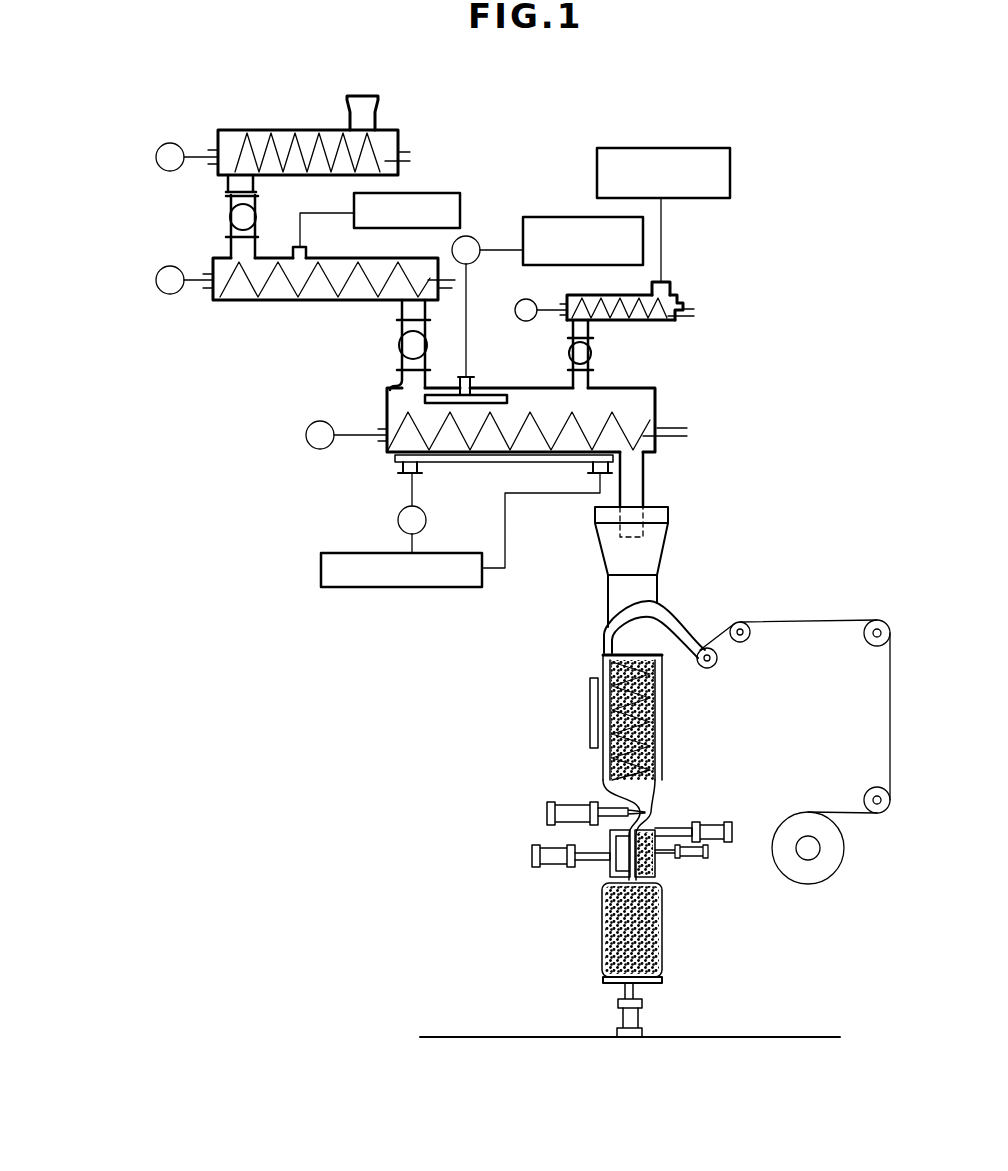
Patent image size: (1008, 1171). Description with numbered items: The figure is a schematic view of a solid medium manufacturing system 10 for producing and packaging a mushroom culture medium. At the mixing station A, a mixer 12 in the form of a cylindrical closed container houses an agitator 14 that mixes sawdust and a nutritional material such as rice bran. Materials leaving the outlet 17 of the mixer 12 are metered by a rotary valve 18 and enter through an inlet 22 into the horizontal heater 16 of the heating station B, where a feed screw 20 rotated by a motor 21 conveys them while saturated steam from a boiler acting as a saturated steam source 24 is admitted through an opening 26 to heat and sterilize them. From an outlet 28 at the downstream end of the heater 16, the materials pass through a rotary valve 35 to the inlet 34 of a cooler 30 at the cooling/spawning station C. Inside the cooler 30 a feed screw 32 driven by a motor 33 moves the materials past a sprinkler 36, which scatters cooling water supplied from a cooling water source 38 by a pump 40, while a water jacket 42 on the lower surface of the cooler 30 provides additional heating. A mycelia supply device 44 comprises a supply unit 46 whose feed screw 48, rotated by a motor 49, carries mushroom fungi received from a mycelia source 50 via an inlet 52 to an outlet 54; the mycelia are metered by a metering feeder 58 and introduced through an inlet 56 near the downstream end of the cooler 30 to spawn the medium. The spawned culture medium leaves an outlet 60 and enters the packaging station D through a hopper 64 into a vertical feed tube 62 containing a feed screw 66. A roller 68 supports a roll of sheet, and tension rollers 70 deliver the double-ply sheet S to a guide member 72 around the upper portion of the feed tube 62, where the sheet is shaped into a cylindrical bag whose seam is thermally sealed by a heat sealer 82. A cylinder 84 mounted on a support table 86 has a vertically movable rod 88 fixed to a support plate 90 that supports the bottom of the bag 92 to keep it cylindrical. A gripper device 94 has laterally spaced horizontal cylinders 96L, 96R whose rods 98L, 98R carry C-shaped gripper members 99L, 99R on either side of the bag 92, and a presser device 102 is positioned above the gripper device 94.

The solid medium manufacturing system 10 is at (320, 551).
The mixer 12 is at (258, 130).
The agitator 14 is at (303, 152).
The horizontal heater 16 is at (316, 300).
The outlet 17 is at (228, 186).
The rotary valve 18 is at (231, 219).
The feed screw 20 is at (240, 300).
The motor 21 is at (175, 294).
The inlet 22 is at (231, 245).
The saturated steam source 24 is at (430, 194).
The opening 26 is at (306, 256).
The outlet 28 is at (403, 316).
The cooler 30 is at (628, 388).
The feed screw 32 is at (396, 444).
The motor 33 is at (310, 445).
The inlet 34 is at (388, 393).
The rotary valve 35 is at (400, 348).
The sprinkler 36 is at (472, 384).
The cooling water source 38 is at (590, 216).
The pump 40 is at (476, 240).
The water jacket 42 is at (460, 463).
The fungi or mycelia supply device 44 is at (692, 298).
The supply unit 46 is at (655, 322).
The feed screw 48 is at (630, 296).
The motor 49 is at (522, 300).
The mushroom fungi or mycelia source 50 is at (730, 152).
The inlet 52 is at (650, 282).
The outlet 54 is at (573, 330).
The inlet 56 is at (572, 384).
The metering feeder 58 is at (590, 353).
The outlet 60 is at (640, 492).
The feed tube 62 is at (656, 704).
The hopper 64 is at (652, 556).
The feed screw 66 is at (652, 748).
The roller 68 is at (836, 862).
The tension rollers 70 is at (874, 620).
The guide member 72 is at (668, 622).
The heat sealer 82 is at (590, 716).
The cylinder 84 is at (640, 1023).
The support table 86 is at (536, 1038).
The rod 88 is at (636, 994).
The support plate 90 is at (610, 984).
The bag 92 is at (664, 942).
The gripper device 94 is at (532, 863).
The cylinder 96L is at (540, 848).
The cylinder 96R is at (706, 822).
The rod 98L is at (585, 862).
The rod 98R is at (672, 830).
The gripper member 99L is at (615, 873).
The gripper member 99R is at (656, 868).
The presser device 102 is at (552, 798).
The mixing station A is at (405, 117).
The heating station B is at (268, 317).
The cooling/spawning station C is at (692, 390).
The packaging station D is at (553, 691).
The double-ply sheet S is at (818, 622).